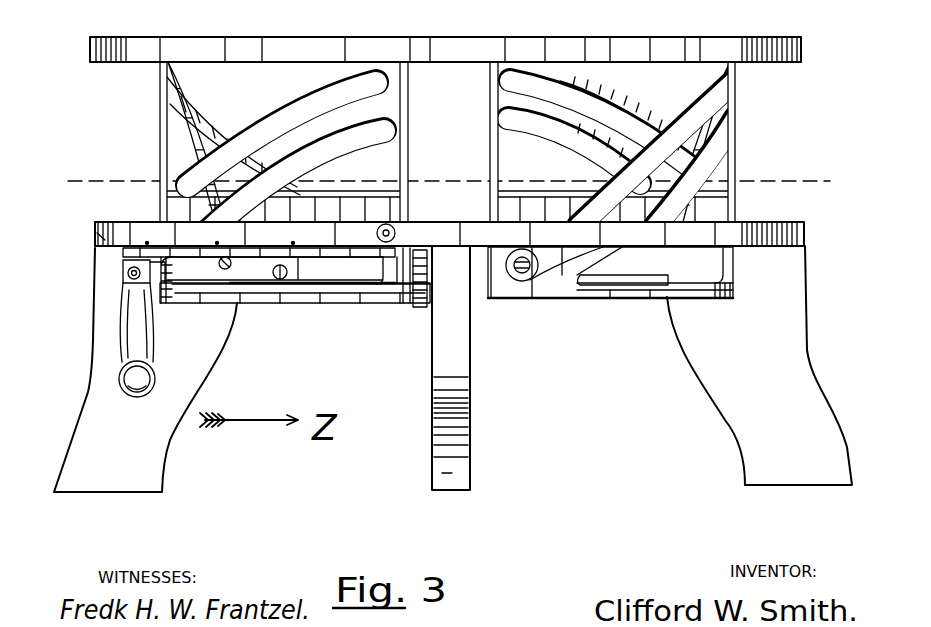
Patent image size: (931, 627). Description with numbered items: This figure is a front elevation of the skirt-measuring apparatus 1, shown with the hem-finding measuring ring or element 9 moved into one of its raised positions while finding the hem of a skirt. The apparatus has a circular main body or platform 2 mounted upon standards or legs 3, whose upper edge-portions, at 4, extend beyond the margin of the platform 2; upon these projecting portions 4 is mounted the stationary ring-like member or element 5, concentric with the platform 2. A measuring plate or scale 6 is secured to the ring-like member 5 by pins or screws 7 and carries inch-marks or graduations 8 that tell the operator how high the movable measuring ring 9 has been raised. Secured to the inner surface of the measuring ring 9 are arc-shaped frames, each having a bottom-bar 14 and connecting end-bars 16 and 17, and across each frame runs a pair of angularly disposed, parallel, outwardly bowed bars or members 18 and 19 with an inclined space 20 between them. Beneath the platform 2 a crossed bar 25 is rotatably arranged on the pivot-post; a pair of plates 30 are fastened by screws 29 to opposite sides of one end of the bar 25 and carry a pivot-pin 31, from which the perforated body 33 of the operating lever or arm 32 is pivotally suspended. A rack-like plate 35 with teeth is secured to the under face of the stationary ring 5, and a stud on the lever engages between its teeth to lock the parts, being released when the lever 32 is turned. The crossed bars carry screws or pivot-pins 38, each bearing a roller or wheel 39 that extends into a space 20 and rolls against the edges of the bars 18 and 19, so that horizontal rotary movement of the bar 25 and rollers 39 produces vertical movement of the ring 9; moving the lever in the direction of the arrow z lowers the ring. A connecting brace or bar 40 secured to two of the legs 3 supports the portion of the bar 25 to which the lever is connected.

The skirt-measuring apparatus 1 is at (445, 31).
The main body or platform 2 is at (355, 197).
The standards or legs 3 is at (198, 364).
The projecting portions of the legs 4 is at (818, 255).
The ring-like member or element 5 is at (428, 218).
The measuring plate or scale 6 is at (95, 243).
The pins or screws 7 is at (379, 228).
The inch-marks or graduations 8 is at (146, 243).
The movable measuring ring or element 9 is at (476, 36).
The bottom-bar 14 is at (210, 297).
The end-bar 16 is at (403, 133).
The end-bar 17 is at (160, 106).
The angularly disposed bar or member 18 is at (210, 150).
The angularly disposed bar or member 19 is at (175, 141).
The space 20 is at (193, 127).
The crossed bar 25 is at (381, 272).
The screws 29 is at (228, 268).
The plates 30 is at (125, 282).
The pivot-pin 31 is at (127, 274).
The lever or arm 32 is at (128, 391).
The perforated body 33 is at (133, 295).
The rack-like plate 35 is at (123, 252).
The screws or pivot-pins 38 is at (516, 277).
The roller or wheel 39 is at (526, 274).
The connecting brace or bar 40 is at (423, 299).